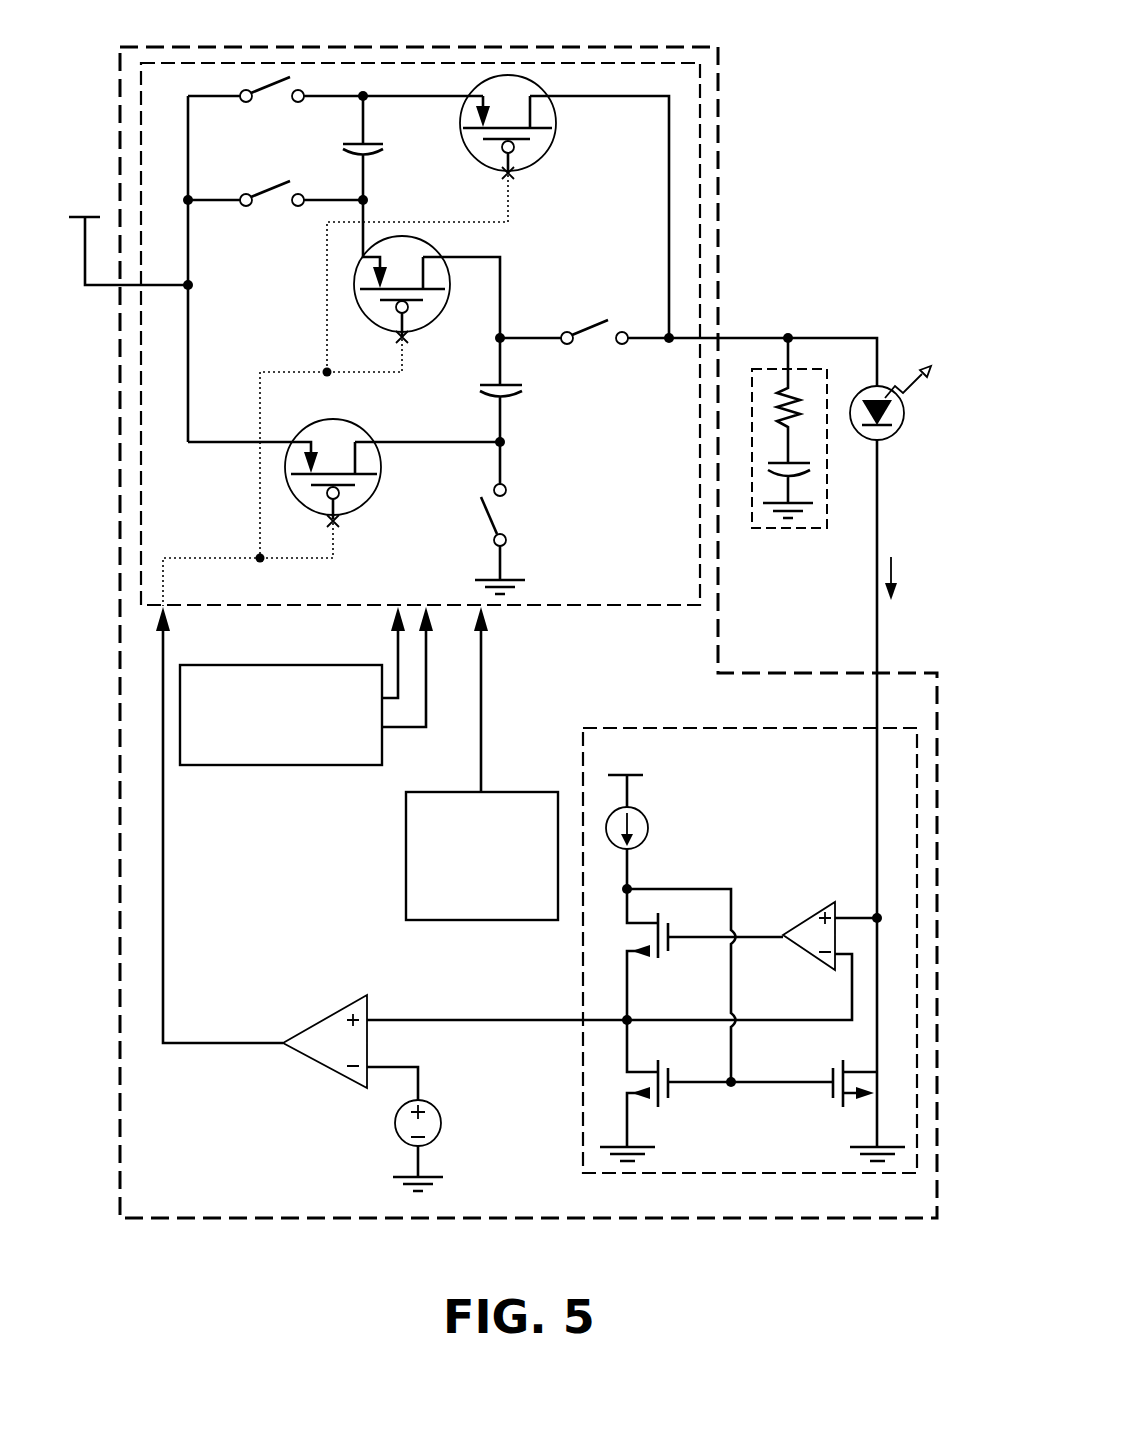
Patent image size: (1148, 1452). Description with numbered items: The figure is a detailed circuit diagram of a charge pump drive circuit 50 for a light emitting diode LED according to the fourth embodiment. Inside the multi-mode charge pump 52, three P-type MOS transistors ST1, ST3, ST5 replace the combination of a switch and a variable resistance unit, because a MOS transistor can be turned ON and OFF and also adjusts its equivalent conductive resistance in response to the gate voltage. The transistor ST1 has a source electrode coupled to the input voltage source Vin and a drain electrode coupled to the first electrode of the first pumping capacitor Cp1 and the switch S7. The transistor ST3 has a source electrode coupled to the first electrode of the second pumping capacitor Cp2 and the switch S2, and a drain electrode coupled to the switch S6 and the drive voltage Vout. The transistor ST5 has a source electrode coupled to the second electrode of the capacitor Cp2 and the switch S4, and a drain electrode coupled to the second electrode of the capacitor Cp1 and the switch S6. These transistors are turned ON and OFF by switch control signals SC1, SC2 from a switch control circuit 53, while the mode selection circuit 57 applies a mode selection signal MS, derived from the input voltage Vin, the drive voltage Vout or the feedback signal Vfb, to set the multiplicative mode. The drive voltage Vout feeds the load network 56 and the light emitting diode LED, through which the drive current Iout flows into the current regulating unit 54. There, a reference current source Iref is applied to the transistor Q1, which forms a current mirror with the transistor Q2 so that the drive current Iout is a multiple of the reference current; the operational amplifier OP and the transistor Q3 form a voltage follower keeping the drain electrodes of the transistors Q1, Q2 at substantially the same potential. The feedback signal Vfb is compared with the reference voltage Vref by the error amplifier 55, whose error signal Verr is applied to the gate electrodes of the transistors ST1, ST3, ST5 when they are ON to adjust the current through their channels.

The charge pump drive circuit 50 is at (162, 48).
The multi-mode charge pump 52 is at (597, 607).
The switch control circuit 53 is at (263, 765).
The current regulating unit 54 is at (668, 728).
The error amplifier 55 is at (326, 1066).
The output load network 56 is at (787, 528).
The mode selection circuit 57 is at (406, 881).
The switch S2 is at (262, 100).
The switch S4 is at (262, 204).
The switch S6 is at (583, 343).
The switch S7 is at (494, 518).
The P-type MOS transistor ST1 is at (370, 500).
The P-type MOS transistor ST3 is at (545, 148).
The P-type MOS transistor ST5 is at (438, 318).
The first pumping capacitor Cp1 is at (522, 393).
The second pumping capacitor Cp2 is at (383, 150).
The input voltage source Vin is at (128, 237).
The drive voltage Vout is at (824, 336).
The light emitting diode LED is at (883, 436).
The drive current Iout is at (920, 574).
The switch control signal SC1 is at (396, 645).
The switch control signal SC2 is at (411, 729).
The mode selection signal MS is at (481, 678).
The feedback signal Vfb is at (500, 1019).
The error signal Verr is at (215, 1046).
The reference voltage Vref is at (442, 1124).
The reference current source Iref is at (648, 823).
The operational amplifier OP is at (809, 913).
The transistor Q1 is at (670, 1099).
The transistor Q2 is at (833, 1099).
The transistor Q3 is at (670, 946).